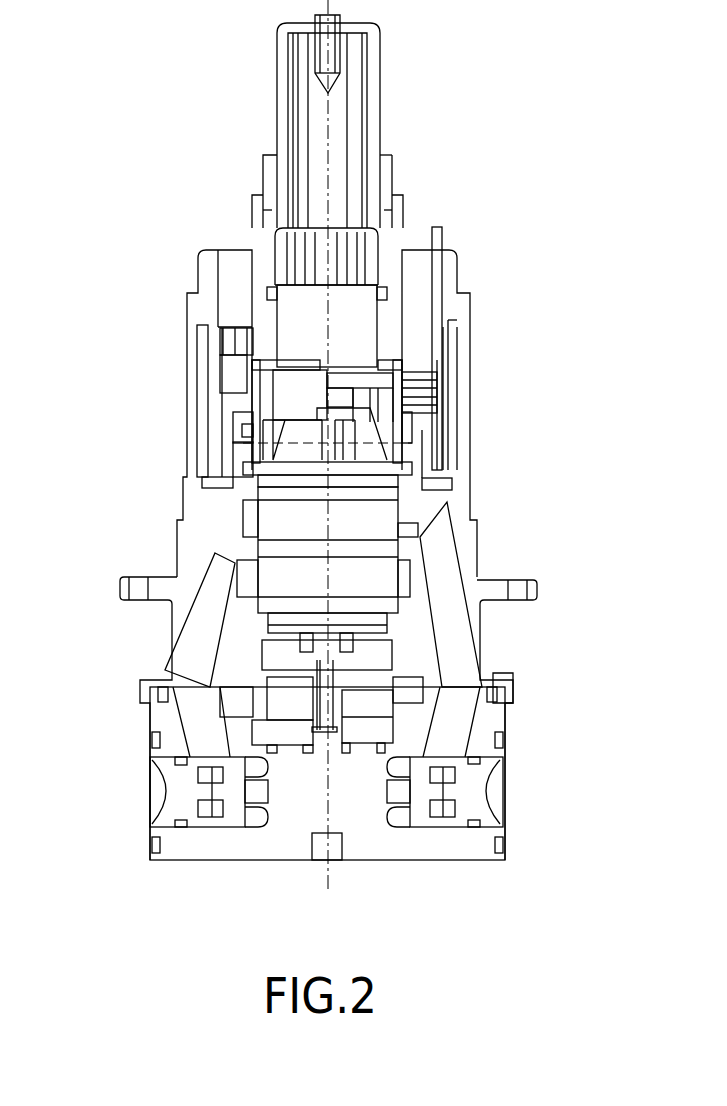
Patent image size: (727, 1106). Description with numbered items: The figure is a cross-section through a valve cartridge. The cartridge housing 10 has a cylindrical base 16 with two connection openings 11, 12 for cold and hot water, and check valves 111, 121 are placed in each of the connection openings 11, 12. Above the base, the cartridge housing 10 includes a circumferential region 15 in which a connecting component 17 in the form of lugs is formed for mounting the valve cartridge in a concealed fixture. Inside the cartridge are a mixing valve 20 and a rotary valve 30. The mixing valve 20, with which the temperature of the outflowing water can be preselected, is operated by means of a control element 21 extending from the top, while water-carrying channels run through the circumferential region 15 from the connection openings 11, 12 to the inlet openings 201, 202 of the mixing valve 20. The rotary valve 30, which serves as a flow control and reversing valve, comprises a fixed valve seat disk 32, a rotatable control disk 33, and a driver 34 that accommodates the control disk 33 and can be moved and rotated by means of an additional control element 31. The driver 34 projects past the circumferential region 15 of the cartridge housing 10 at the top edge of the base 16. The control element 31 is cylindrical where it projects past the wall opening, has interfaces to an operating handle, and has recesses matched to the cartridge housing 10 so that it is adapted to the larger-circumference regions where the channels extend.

The cartridge housing 10 is at (176, 518).
The connection opening 11 is at (490, 780).
The check valve 111 is at (477, 803).
The connection opening 12 is at (163, 782).
The check valve 121 is at (190, 802).
The circumferential region 15 is at (246, 375).
The cylindrical base 16 is at (433, 847).
The connecting component 17 is at (540, 588).
The mixing valve 20 is at (400, 509).
The inlet opening 201 is at (257, 587).
The inlet opening 202 is at (402, 525).
The control element 21 is at (372, 156).
The rotary valve 30 is at (372, 690).
The control element 31 is at (470, 327).
The valve seat disk 32 is at (377, 733).
The control disk 33 is at (352, 683).
The driver 34 is at (262, 685).